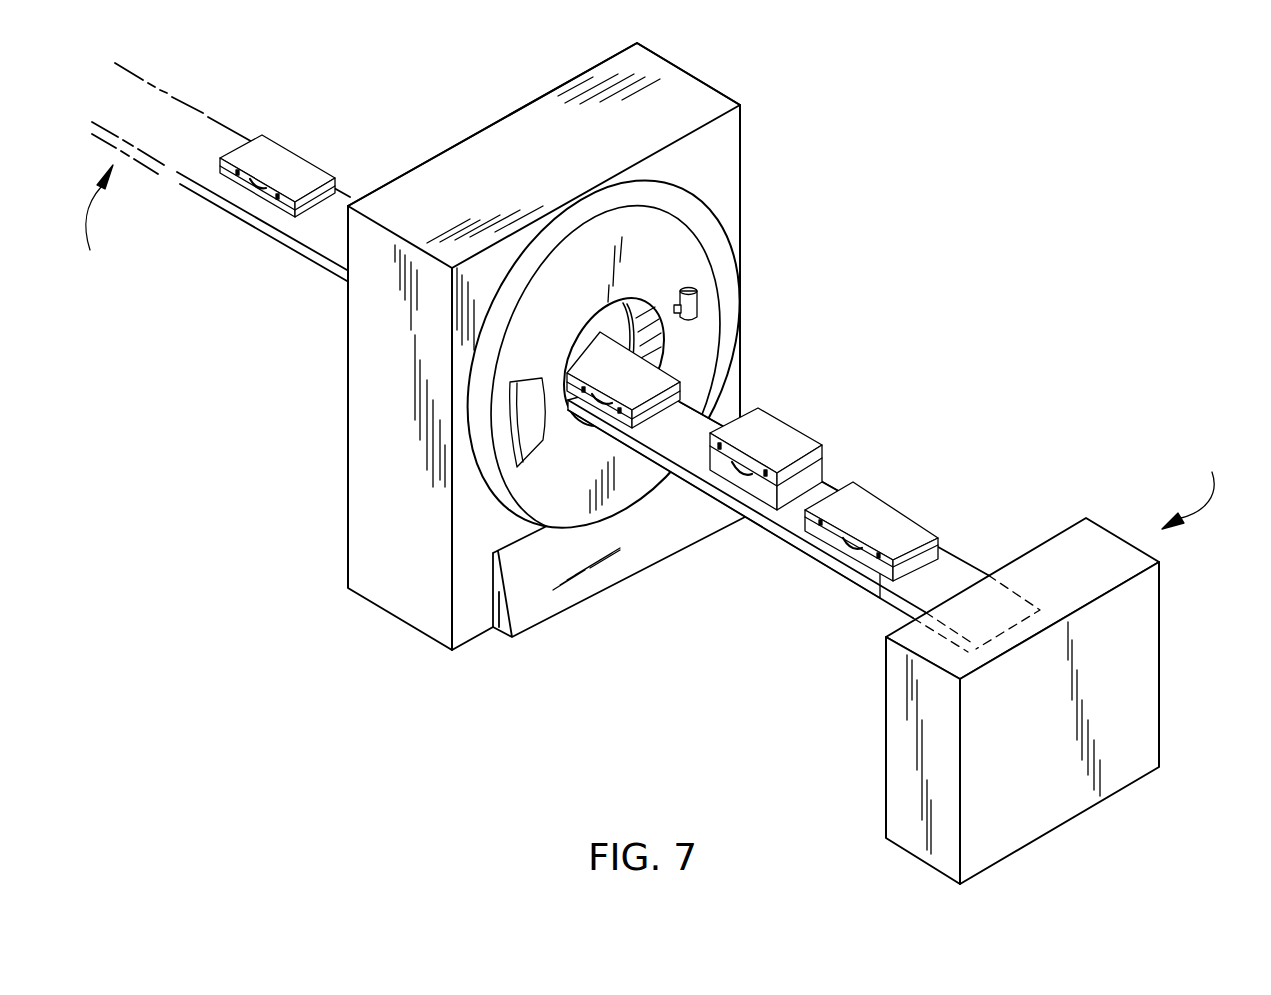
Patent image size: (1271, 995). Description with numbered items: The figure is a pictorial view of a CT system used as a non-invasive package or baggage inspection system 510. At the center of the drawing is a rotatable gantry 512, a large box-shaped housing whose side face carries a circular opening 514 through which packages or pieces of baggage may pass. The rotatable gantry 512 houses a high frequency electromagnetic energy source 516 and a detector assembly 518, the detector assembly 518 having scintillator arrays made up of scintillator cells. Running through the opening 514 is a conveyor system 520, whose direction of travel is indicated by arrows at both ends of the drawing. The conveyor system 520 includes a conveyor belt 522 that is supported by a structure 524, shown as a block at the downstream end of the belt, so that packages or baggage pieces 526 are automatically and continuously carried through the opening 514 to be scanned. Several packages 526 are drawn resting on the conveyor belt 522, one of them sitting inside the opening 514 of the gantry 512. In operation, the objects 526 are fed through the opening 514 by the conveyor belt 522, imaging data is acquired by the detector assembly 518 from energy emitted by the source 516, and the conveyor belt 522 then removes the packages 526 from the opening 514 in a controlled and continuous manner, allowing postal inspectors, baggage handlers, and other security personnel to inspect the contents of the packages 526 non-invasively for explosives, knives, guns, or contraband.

The package/baggage inspection system 510 is at (909, 356).
The rotatable gantry 512 is at (684, 249).
The opening 514 is at (648, 298).
The high frequency electromagnetic energy source 516 is at (698, 307).
The detector assembly 518 is at (530, 388).
The conveyor system 520 is at (657, 347).
The conveyor belt 522 is at (320, 237).
The structure 524 is at (1146, 655).
The packages or baggage pieces 526 is at (290, 160).